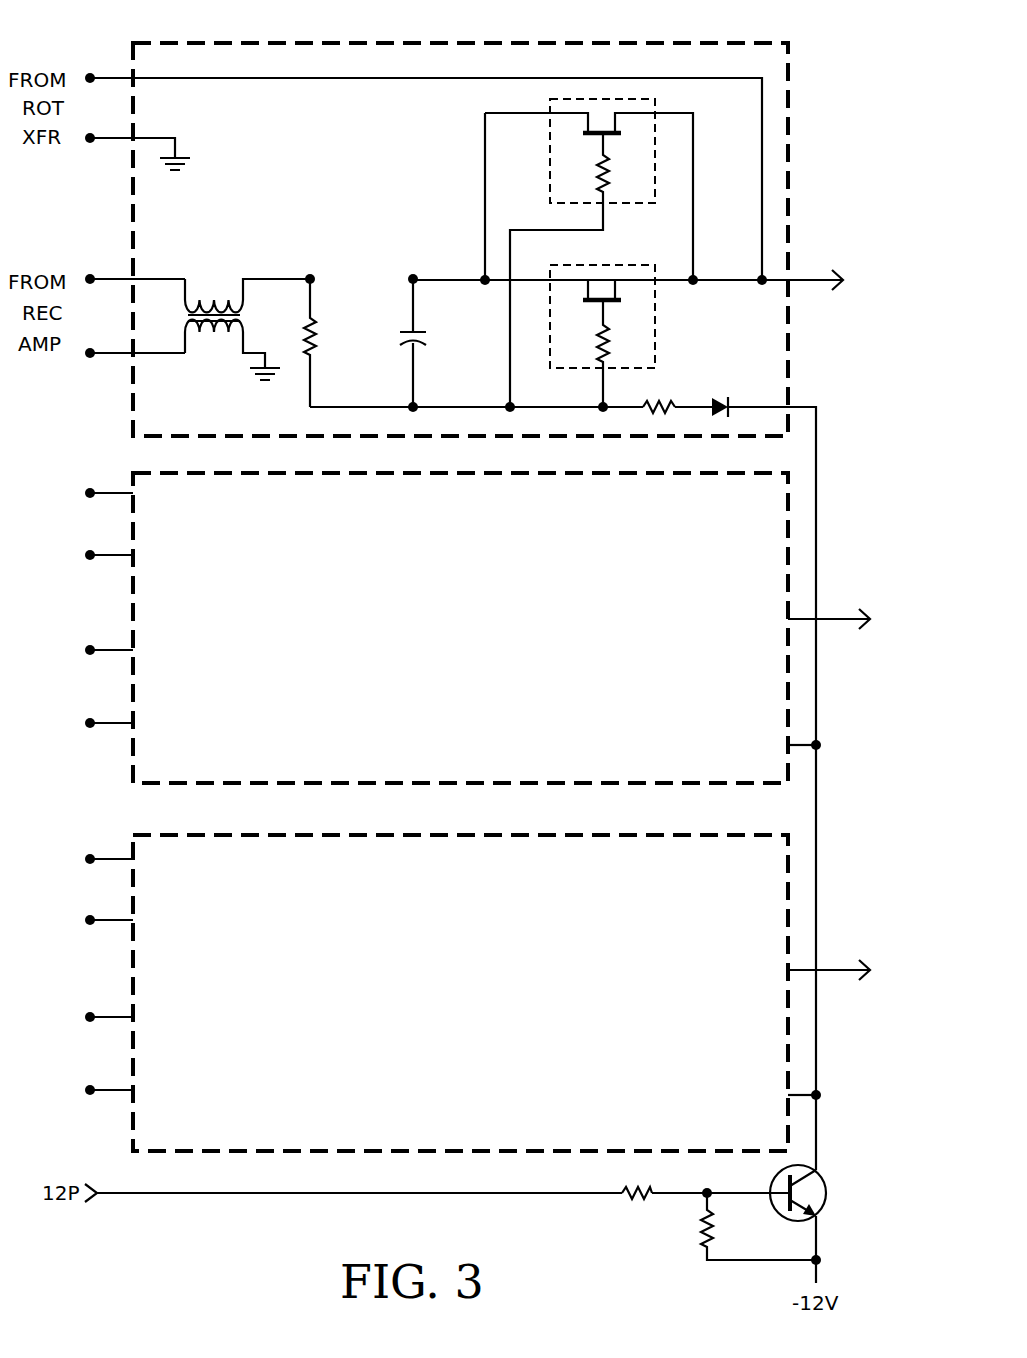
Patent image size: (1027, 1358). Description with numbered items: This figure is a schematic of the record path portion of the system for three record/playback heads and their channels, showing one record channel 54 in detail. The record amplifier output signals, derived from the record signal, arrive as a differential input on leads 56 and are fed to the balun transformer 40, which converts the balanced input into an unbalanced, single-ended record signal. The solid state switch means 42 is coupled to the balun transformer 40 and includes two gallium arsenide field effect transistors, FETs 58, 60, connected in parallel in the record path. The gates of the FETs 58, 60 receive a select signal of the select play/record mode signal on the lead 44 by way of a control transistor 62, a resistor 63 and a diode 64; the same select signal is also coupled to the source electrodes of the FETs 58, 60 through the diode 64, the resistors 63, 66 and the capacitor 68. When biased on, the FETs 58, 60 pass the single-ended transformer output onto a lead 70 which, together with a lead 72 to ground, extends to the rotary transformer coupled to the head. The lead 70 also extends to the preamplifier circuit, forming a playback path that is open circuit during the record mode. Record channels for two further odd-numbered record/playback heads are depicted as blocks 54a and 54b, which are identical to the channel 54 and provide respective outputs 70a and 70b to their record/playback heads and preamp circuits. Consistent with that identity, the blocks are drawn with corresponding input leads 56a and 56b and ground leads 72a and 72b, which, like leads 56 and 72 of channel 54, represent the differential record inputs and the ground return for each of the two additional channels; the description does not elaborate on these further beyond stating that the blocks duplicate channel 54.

The record channel 54 is at (266, 36).
The record channel block 54a is at (138, 468).
The record channel block 54b is at (138, 830).
The lead 70 is at (113, 78).
The output 70a is at (118, 490).
The output 70b is at (830, 968).
The lead to ground 72 is at (113, 138).
The ground line 72a is at (117, 552).
The ground line 72b is at (117, 918).
The balun transformer 40 is at (214, 278).
The leads 56 is at (153, 280).
The input from receive amplifier 56a is at (123, 652).
The input from receive amplifier 56b is at (123, 1019).
The resistor 66 is at (322, 340).
The capacitor 68 is at (426, 333).
The GaAs FET 58 is at (607, 98).
The GaAs FET 60 is at (655, 326).
The solid state switch means 42 is at (666, 180).
The resistor 63 is at (660, 400).
The diode 64 is at (716, 400).
The control transistor 62 is at (827, 1190).
The lead 44 is at (150, 1193).